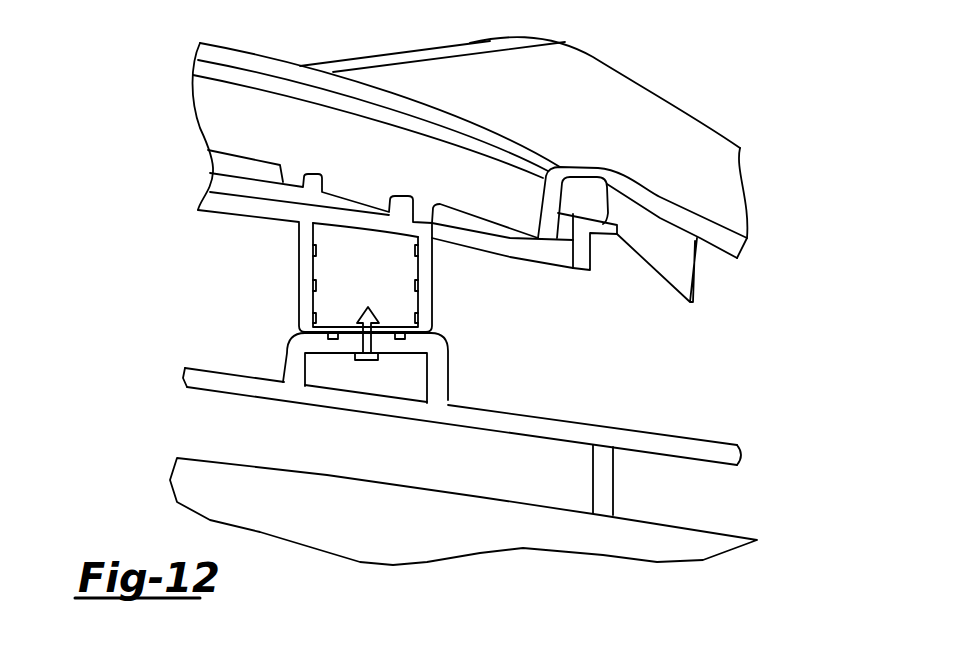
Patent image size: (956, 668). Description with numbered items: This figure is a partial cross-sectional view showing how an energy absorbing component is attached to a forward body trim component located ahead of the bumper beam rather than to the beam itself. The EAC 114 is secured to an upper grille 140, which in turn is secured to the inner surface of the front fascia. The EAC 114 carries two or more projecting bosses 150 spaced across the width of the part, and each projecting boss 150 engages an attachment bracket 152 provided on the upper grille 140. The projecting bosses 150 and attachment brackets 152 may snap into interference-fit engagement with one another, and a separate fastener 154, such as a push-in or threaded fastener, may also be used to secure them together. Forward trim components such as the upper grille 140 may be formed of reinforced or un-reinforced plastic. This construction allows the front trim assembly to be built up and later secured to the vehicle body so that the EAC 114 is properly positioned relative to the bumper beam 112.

The bumper beam 112 is at (652, 542).
The EAC 114 is at (645, 429).
The upper grille 140 is at (249, 208).
The projecting boss 150 is at (440, 367).
The attachment bracket 152 is at (307, 267).
The fastener 154 is at (366, 361).